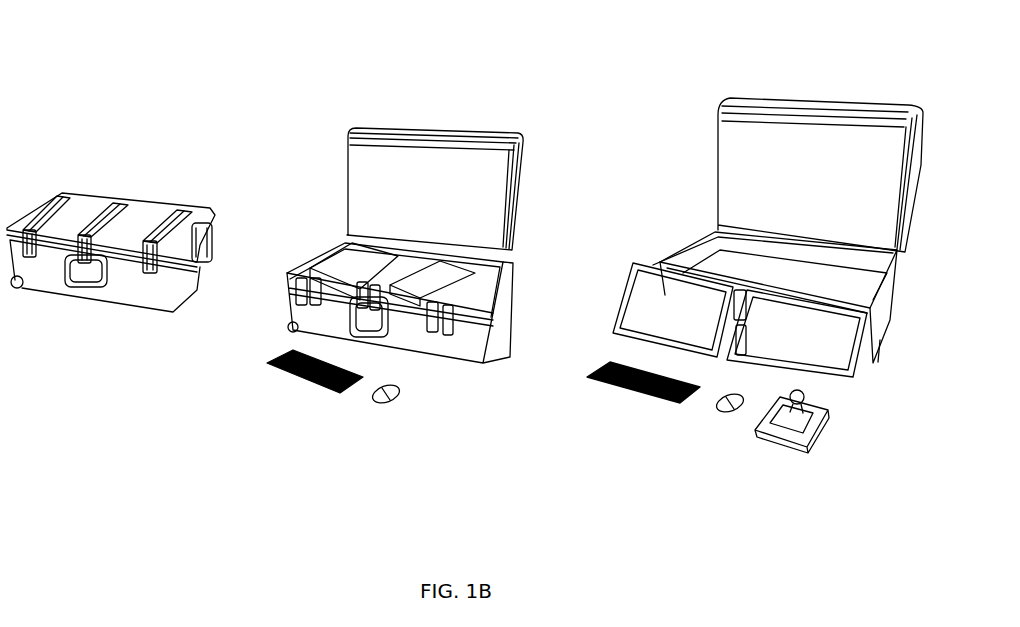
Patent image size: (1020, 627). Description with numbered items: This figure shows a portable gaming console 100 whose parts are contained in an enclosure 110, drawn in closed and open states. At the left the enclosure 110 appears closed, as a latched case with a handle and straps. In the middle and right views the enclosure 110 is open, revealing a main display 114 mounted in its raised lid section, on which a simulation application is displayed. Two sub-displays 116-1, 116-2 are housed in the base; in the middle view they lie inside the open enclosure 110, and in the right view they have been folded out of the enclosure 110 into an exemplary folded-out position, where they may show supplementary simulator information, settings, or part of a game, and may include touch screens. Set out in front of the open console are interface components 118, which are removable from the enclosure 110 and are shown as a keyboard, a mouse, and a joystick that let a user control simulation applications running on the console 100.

The portable gaming console 100 is at (180, 167).
The enclosure 110 is at (107, 192).
The main display 114 is at (382, 148).
The first sub-display 116-1 is at (340, 260).
The second sub-display 116-2 is at (473, 277).
The interface components 118 is at (372, 400).